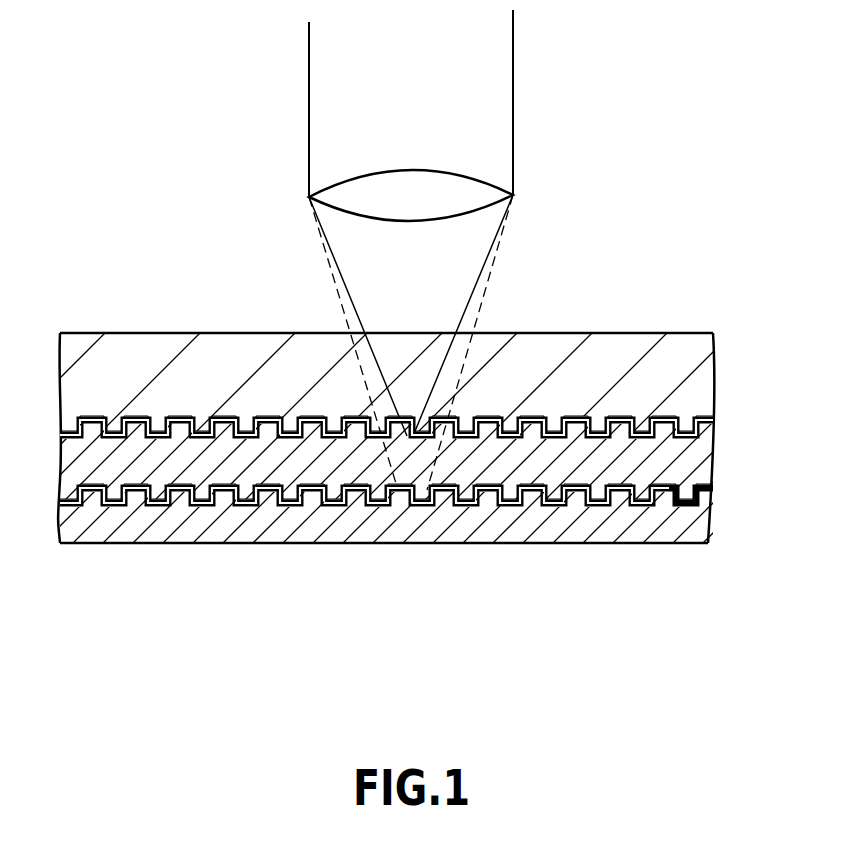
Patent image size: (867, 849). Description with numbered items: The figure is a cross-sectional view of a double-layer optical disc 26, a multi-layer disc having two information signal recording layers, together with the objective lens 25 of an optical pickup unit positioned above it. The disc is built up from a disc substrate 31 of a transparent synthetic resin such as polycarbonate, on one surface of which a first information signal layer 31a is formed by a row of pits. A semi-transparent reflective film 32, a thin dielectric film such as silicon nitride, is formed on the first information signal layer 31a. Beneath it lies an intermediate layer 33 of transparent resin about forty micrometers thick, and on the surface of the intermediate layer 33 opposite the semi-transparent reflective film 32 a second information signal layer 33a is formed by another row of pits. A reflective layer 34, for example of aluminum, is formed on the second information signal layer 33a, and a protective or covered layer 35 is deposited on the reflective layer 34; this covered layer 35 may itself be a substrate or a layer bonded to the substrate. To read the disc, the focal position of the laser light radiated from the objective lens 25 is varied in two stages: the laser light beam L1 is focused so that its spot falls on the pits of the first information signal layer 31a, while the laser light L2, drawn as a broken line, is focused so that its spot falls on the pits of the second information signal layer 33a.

The objective lens 25 is at (415, 185).
The double-layer optical disc 26 is at (433, 387).
The disc substrate 31 is at (692, 352).
The first information signal layer 31a is at (655, 420).
The semi-transparent reflective film 32 is at (715, 428).
The intermediate layer 33 is at (693, 455).
The second information signal layer 33a is at (655, 485).
The reflective layer 34 is at (707, 497).
The protective or covered layer 35 is at (627, 544).
The laser light beam L1 is at (484, 258).
The laser light L2 is at (478, 316).